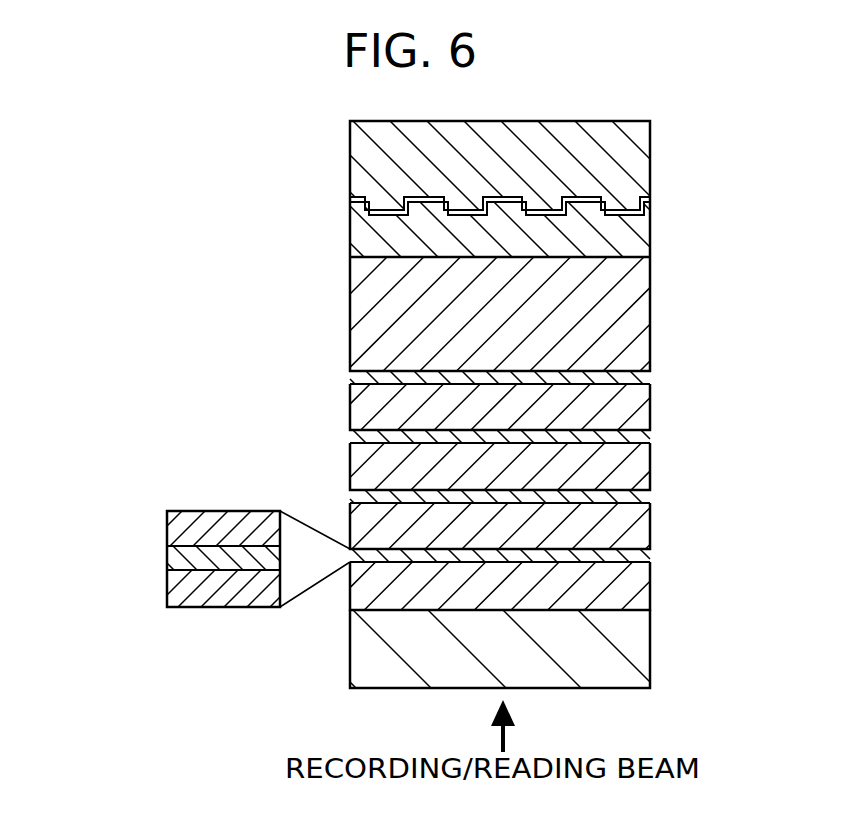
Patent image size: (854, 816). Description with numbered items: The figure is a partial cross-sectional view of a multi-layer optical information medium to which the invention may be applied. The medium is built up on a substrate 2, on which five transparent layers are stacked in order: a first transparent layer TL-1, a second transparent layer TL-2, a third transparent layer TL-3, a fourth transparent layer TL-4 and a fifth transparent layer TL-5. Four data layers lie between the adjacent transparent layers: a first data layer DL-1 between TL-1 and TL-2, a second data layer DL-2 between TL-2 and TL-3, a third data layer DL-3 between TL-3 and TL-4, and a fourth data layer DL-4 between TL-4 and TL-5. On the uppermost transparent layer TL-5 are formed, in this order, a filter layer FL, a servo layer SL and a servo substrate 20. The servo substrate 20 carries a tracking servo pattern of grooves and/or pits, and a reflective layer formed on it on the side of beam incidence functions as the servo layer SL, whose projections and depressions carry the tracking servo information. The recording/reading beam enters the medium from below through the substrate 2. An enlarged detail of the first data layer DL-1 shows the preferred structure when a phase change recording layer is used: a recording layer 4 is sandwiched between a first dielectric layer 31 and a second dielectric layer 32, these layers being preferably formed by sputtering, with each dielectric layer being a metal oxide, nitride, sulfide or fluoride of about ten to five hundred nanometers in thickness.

The servo substrate 20 is at (650, 157).
The servo layer SL is at (350, 200).
The filter layer FL is at (650, 242).
The transparent layer TL-5 is at (650, 315).
The data layer DL-4 is at (350, 377).
The transparent layer TL-4 is at (650, 403).
The data layer DL-3 is at (350, 436).
The transparent layer TL-3 is at (650, 463).
The data layer DL-2 is at (350, 496).
The transparent layer TL-2 is at (650, 523).
The data layer DL-1 is at (333, 559).
The transparent layer TL-1 is at (650, 583).
The substrate 2 is at (650, 647).
The first dielectric layer 31 is at (165, 527).
The recording layer 4 is at (165, 557).
The second dielectric layer 32 is at (192, 588).